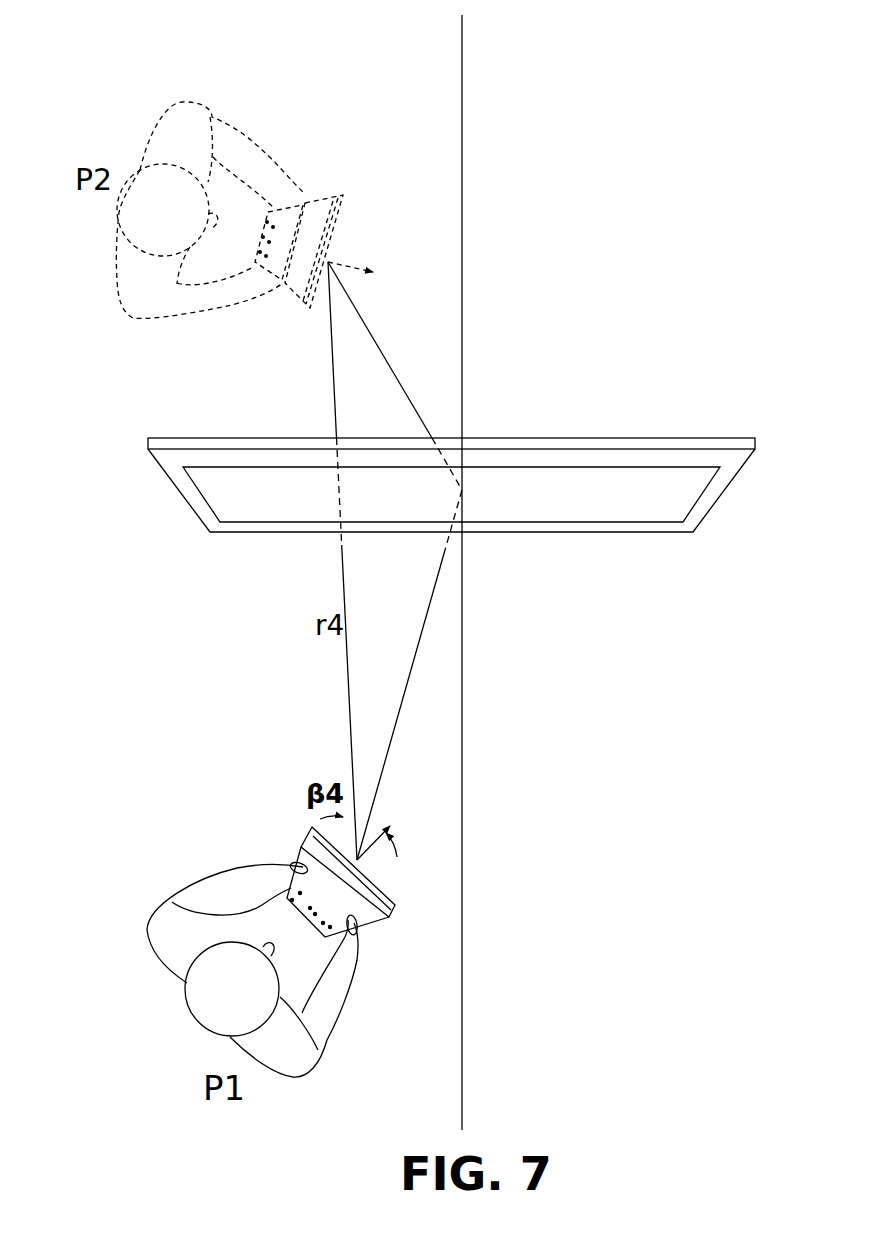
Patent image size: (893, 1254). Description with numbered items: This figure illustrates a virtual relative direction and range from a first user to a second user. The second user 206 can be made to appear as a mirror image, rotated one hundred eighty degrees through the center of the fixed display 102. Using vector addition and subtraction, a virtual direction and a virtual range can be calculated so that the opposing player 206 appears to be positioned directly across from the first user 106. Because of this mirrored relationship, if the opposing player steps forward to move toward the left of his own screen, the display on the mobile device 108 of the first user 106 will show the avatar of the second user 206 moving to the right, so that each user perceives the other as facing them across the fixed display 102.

The fixed display 102 is at (187, 437).
The first user 106 is at (147, 932).
The mobile device 108 is at (305, 838).
The second user 206 is at (118, 276).